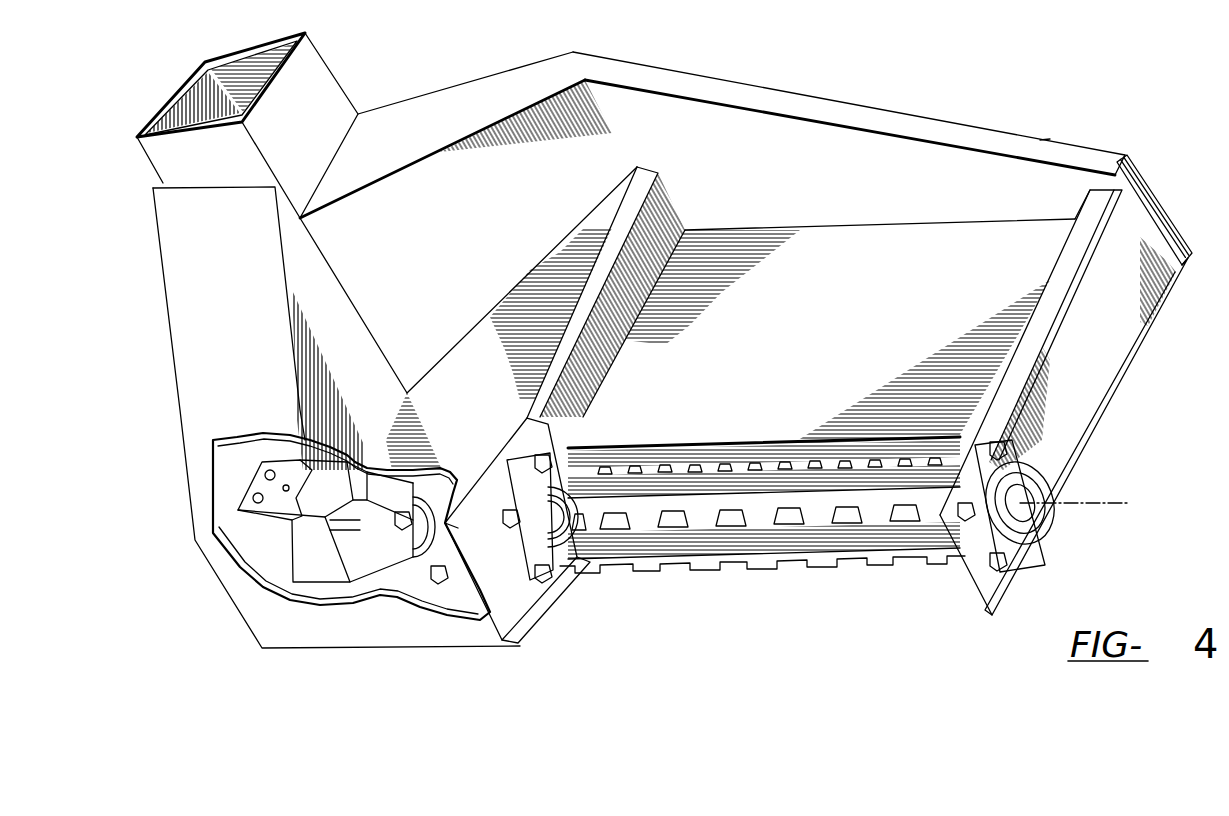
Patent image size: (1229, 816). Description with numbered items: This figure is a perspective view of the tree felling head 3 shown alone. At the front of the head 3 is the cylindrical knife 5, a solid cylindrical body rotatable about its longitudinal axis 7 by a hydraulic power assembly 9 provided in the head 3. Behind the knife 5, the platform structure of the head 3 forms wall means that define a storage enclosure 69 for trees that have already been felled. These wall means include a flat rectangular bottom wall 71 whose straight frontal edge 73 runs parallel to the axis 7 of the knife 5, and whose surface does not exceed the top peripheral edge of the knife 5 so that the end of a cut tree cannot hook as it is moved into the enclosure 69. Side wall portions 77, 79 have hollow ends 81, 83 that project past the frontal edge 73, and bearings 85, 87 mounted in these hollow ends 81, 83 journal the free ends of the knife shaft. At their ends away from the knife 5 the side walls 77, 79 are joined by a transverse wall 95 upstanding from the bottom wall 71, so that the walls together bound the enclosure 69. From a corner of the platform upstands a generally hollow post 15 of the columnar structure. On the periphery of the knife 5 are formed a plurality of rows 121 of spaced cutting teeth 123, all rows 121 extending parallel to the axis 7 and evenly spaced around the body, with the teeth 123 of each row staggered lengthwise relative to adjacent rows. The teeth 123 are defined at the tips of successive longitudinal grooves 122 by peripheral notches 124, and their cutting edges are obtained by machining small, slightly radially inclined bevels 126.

The tree felling head 3 is at (905, 100).
The cylindrical knife 5 is at (850, 568).
The longitudinal axis 7 is at (1130, 503).
The hydraulic power assembly 9 is at (288, 592).
The hollow post 15 is at (325, 73).
The storage enclosure 69 is at (755, 210).
The bottom wall 71 is at (1025, 268).
The frontal edge 73 is at (748, 452).
The side wall portion 77 is at (1030, 312).
The side wall portion 79 is at (545, 410).
The hollow end 81 is at (600, 602).
The hollow end 83 is at (1000, 588).
The bearing 85 is at (520, 543).
The bearing 87 is at (1045, 530).
The transverse wall 95 is at (1022, 177).
The rows of cutting teeth 121 is at (762, 570).
The longitudinal grooves 122 is at (784, 472).
The cutting teeth 123 is at (712, 470).
The peripheral notches 124 is at (750, 520).
The bevels 126 is at (680, 548).